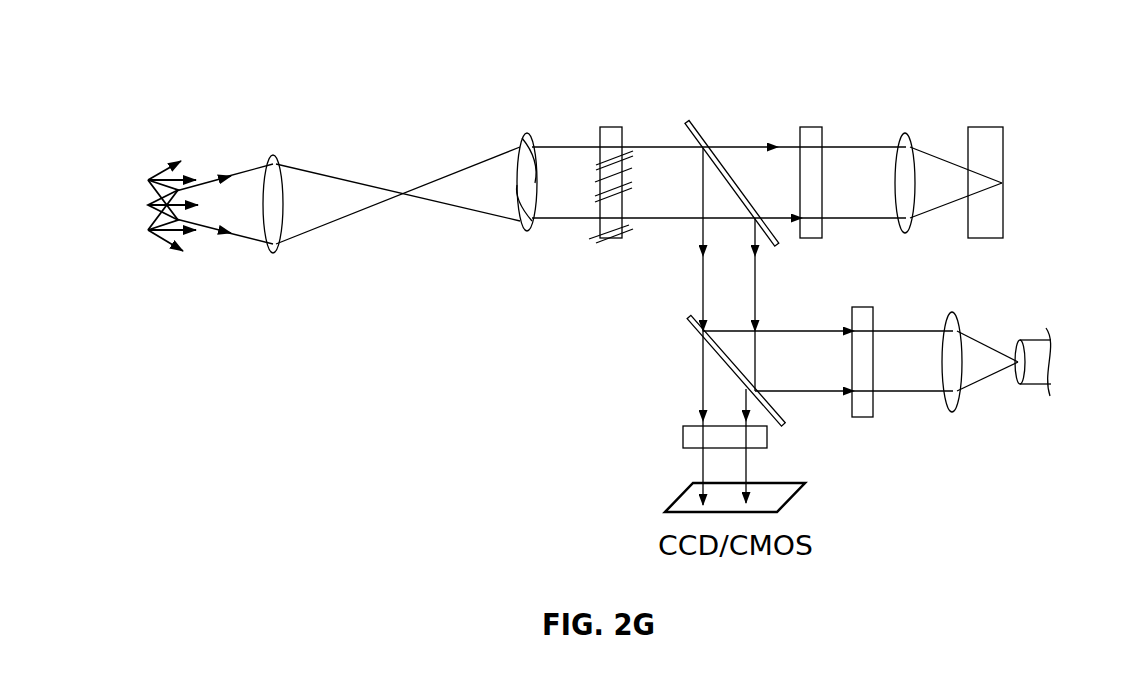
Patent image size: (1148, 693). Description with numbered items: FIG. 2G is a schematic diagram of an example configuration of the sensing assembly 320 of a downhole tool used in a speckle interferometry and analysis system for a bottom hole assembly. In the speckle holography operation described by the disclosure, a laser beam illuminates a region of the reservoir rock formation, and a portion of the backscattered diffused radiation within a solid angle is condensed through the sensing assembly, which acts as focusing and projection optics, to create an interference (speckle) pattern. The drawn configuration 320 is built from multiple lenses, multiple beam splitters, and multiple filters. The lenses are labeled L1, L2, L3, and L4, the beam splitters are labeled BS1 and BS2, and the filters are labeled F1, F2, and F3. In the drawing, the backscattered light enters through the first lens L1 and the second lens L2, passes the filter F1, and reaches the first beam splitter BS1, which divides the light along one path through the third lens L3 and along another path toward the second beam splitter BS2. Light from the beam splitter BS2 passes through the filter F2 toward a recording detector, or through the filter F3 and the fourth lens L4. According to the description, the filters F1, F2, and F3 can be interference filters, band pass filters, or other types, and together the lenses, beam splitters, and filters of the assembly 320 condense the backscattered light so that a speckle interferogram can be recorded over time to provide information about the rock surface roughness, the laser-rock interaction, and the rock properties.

The sensing assembly configuration 320 is at (513, 161).
The lens L1 is at (266, 230).
The lens L2 is at (516, 208).
The lens L3 is at (902, 206).
The lens L4 is at (946, 391).
The filter F1 is at (611, 162).
The filter F2 is at (748, 448).
The filter F3 is at (864, 389).
The beam splitter BS1 is at (732, 174).
The beam splitter BS2 is at (710, 370).